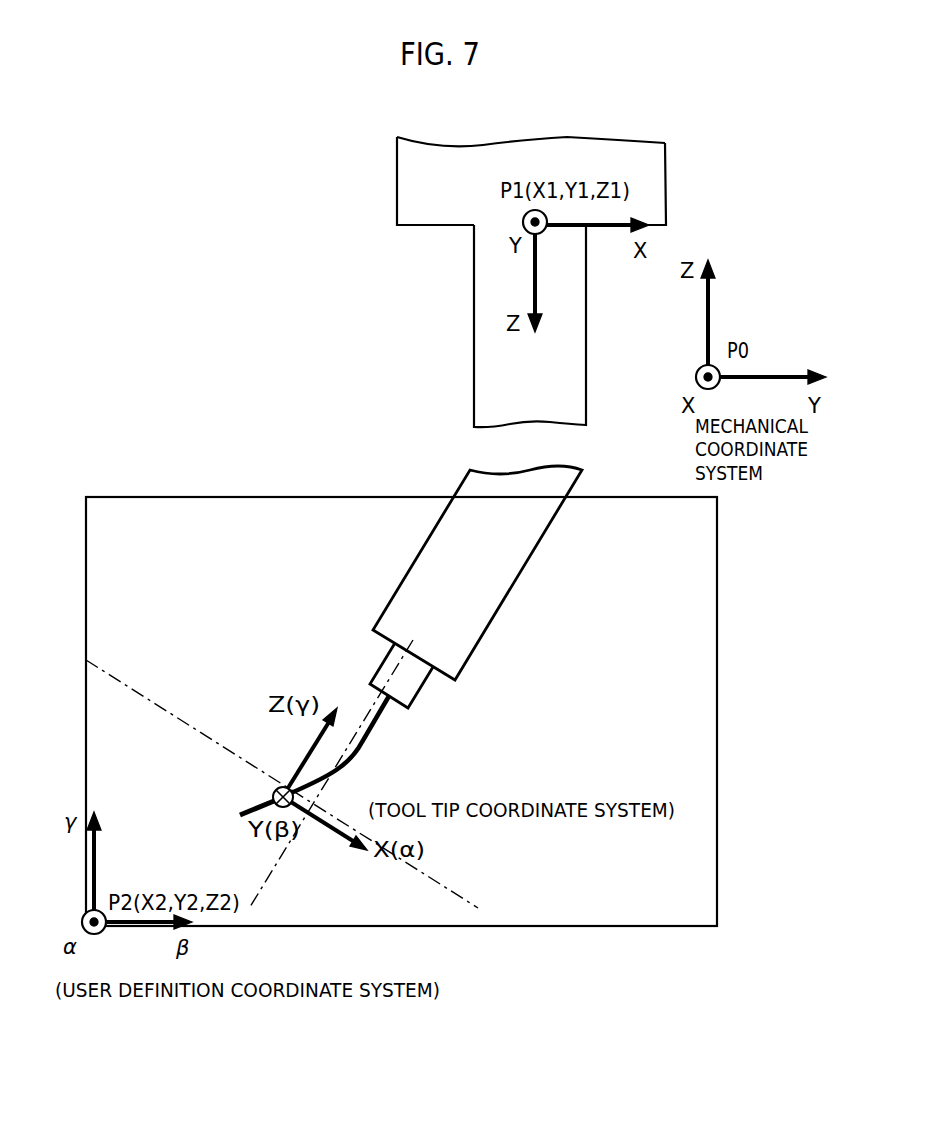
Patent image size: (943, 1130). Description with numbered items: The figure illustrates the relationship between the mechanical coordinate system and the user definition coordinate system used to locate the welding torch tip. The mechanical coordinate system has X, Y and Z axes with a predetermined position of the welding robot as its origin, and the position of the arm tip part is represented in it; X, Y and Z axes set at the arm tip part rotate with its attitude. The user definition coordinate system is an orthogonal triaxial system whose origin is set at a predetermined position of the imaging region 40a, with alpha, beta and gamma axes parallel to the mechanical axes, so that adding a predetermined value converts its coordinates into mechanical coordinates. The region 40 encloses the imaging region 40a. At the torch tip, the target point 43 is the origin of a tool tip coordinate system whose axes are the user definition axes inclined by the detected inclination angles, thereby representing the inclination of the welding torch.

The workpiece / machining area 40 is at (692, 630).
The imaging region 40a is at (583, 912).
The target point 43 is at (324, 751).